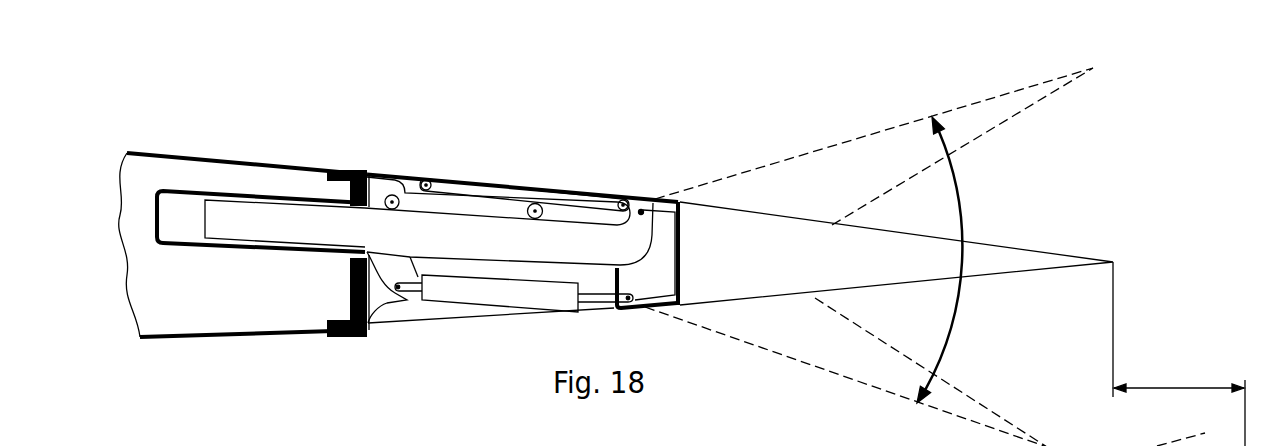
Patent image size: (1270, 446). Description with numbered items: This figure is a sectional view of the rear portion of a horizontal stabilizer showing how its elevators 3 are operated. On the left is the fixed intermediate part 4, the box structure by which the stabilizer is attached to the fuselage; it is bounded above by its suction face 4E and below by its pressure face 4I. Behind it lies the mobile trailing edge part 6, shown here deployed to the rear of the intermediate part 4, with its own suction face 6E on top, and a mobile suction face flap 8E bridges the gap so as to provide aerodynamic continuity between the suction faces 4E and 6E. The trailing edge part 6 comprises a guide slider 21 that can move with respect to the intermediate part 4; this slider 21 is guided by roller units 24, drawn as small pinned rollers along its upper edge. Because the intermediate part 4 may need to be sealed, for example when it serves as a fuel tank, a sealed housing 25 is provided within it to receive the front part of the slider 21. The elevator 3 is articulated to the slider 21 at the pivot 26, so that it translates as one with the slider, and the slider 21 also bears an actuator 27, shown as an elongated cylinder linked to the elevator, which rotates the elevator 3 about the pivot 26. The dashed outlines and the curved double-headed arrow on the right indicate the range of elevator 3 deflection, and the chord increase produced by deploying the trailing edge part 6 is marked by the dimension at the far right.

The elevator 3 is at (977, 262).
The intermediate part 4 is at (197, 300).
The suction face of the intermediate part 4E is at (203, 152).
The pressure face of the intermediate part 4I is at (258, 338).
The trailing edge part 6 is at (699, 158).
The suction face of the trailing edge part 6E is at (517, 182).
The mobile suction face flap 8E is at (570, 196).
The guide slider 21 is at (490, 240).
The roller unit 24 is at (457, 205).
The sealed housing 25 is at (172, 250).
The articulation 26 is at (641, 209).
The actuator 27 is at (457, 288).